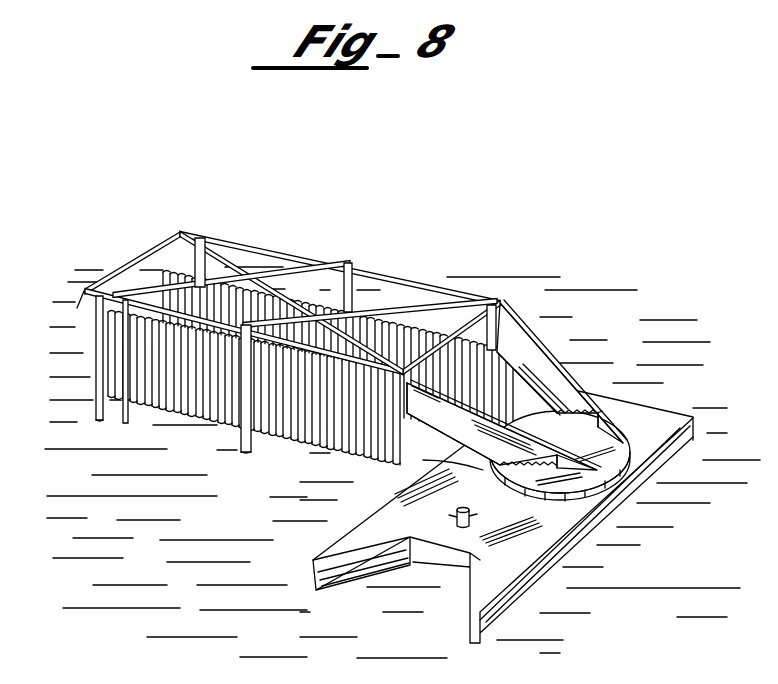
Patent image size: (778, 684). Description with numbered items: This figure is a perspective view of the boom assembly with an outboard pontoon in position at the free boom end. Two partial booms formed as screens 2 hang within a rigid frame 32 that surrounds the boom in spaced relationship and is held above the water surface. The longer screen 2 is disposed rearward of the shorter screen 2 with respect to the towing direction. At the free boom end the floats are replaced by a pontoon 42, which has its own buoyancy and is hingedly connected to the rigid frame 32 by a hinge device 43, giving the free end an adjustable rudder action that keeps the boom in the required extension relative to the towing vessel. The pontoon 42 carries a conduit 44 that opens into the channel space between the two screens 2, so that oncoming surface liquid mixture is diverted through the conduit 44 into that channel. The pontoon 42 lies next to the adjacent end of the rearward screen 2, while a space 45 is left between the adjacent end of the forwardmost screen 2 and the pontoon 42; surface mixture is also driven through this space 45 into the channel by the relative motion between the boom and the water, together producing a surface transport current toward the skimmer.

The screen 2 is at (210, 392).
The rigid frame 32 is at (415, 280).
The pontoon 42 is at (557, 515).
The hinge device 43 is at (582, 440).
The conduit 44 is at (535, 586).
The space 45 is at (469, 503).